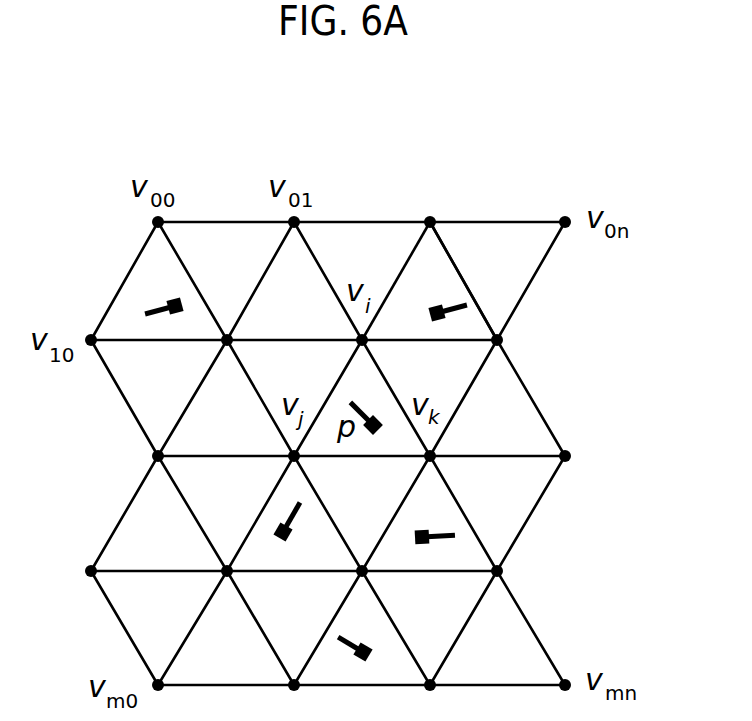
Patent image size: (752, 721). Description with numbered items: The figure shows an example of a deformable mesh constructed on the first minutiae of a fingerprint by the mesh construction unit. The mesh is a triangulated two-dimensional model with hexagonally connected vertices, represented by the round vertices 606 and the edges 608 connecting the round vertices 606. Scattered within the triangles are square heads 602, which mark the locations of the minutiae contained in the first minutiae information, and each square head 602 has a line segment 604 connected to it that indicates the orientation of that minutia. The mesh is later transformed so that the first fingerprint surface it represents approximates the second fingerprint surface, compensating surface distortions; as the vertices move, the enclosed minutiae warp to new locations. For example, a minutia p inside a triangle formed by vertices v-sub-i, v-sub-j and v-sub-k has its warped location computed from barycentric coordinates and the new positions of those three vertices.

The square heads 602 is at (437, 306).
The line segments 604 is at (478, 318).
The round vertices 606 is at (430, 222).
The edges 608 is at (393, 273).